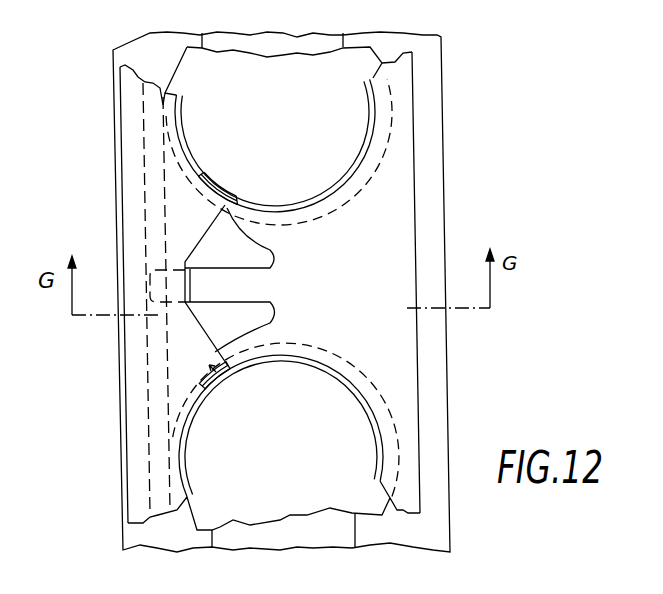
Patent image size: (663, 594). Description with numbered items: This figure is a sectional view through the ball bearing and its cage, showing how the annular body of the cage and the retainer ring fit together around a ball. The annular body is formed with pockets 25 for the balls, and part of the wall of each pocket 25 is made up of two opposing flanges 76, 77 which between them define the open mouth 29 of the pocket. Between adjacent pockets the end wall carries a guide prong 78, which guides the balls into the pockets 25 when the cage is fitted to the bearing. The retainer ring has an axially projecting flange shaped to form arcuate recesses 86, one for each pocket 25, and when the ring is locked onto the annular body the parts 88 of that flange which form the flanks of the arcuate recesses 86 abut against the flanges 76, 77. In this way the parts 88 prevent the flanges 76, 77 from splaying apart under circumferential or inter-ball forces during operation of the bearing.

The pocket 25 is at (347, 122).
The open mouth 29 is at (183, 115).
The flange 76 is at (218, 183).
The flange 77 is at (258, 365).
The guide prong 78 is at (218, 288).
The arcuate recess 86 is at (182, 143).
The flank part of flange 88 is at (235, 198).